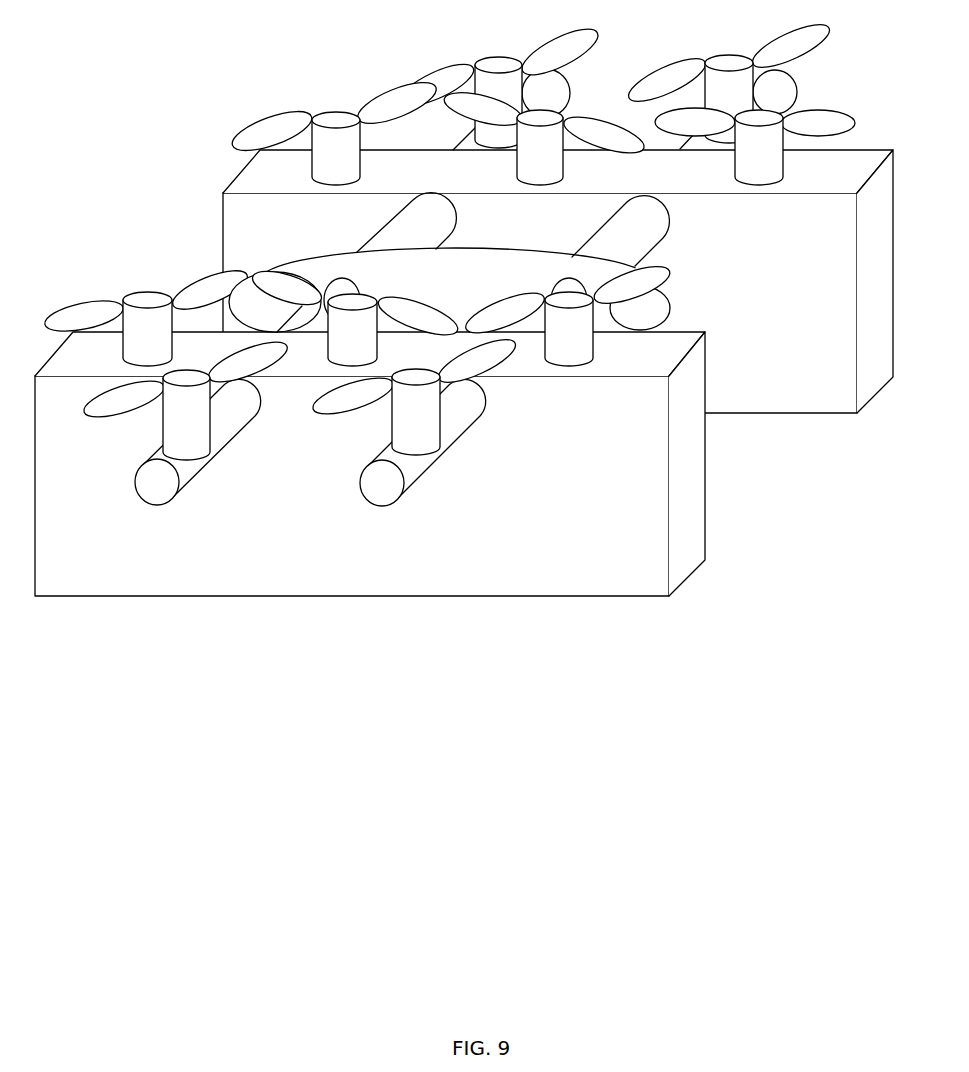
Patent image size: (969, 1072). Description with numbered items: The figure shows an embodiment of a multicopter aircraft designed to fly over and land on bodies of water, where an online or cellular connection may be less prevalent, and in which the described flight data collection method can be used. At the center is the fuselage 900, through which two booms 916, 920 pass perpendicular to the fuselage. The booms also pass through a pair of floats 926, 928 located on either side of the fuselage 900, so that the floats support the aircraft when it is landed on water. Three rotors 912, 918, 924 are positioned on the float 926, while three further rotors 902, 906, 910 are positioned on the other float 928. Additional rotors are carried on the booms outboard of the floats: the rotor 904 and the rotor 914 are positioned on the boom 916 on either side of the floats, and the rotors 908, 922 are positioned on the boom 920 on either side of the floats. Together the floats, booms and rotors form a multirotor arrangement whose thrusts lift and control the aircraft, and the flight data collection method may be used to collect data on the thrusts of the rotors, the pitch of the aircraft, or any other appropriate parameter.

The fuselage 900 is at (316, 258).
The rotor 902 is at (238, 144).
The rotor 904 is at (475, 72).
The rotor 906 is at (565, 167).
The rotor 908 is at (708, 62).
The rotor 910 is at (852, 122).
The rotor 912 is at (98, 316).
The seventh propeller unit 914 is at (112, 413).
The boom 916 is at (183, 488).
The rotor 918 is at (297, 330).
The boom 920 is at (433, 470).
The rotor 922 is at (512, 362).
The rotor 924 is at (597, 323).
The float 926 is at (605, 597).
The float 928 is at (823, 414).